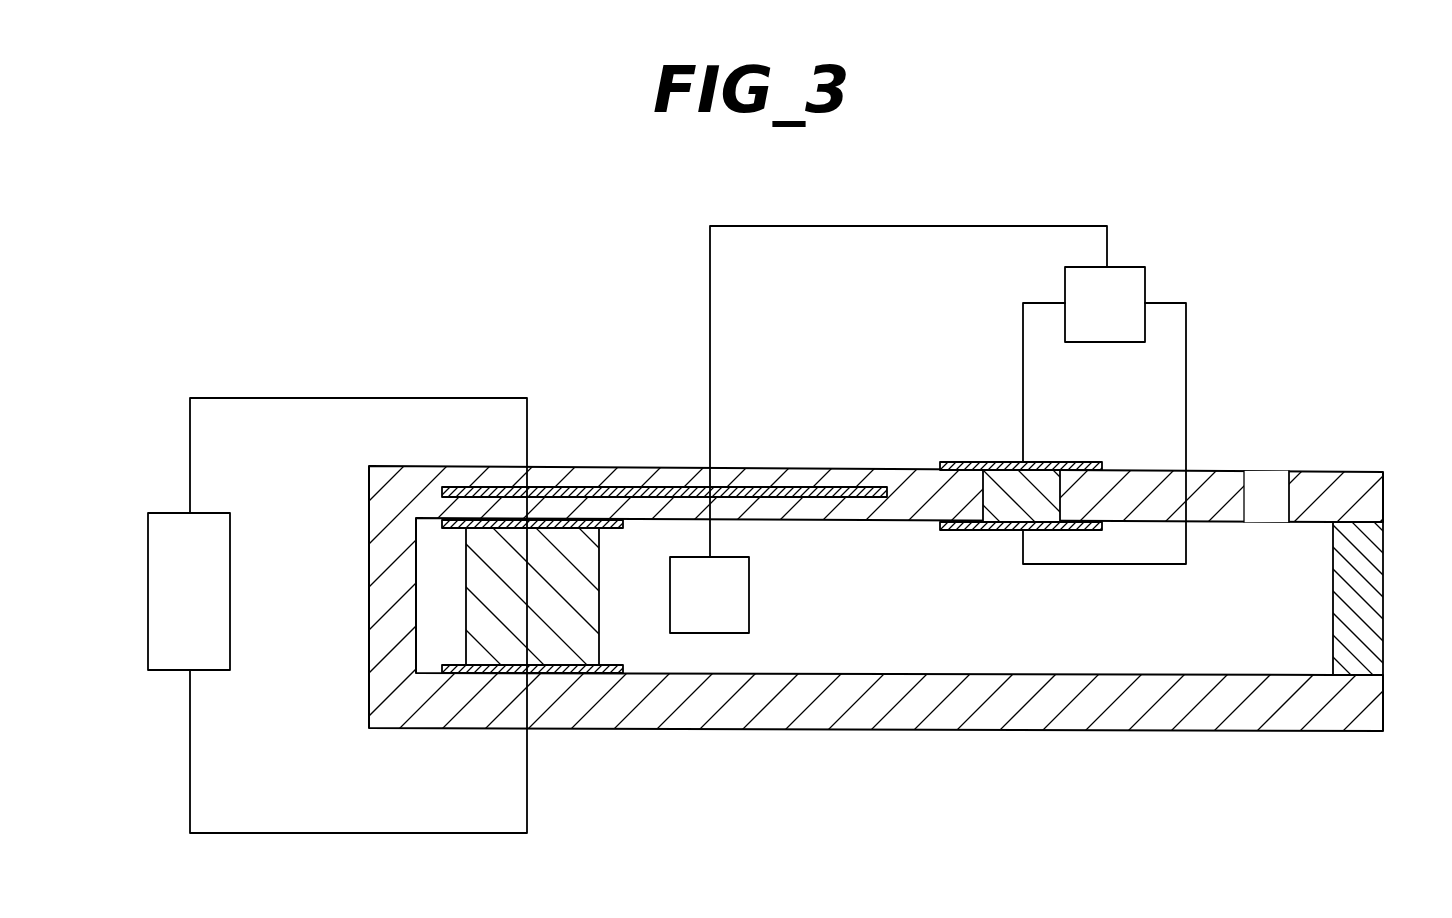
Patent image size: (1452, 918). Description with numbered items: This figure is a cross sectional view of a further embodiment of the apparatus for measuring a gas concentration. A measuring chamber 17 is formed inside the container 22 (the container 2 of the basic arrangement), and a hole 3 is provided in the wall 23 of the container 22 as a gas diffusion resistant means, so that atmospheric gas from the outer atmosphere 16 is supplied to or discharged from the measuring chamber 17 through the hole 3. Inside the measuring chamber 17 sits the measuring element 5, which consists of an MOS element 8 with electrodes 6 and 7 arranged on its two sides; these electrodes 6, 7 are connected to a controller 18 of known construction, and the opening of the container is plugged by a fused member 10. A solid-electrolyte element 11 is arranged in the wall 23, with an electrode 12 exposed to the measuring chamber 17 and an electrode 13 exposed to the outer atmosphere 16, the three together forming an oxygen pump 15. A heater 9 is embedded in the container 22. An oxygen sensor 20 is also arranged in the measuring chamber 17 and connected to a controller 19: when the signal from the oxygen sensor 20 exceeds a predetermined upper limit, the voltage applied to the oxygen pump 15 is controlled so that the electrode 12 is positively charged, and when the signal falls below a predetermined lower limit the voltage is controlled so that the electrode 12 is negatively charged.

The container 2 is at (402, 482).
The hole 3 is at (1260, 487).
The measuring element 5 is at (617, 605).
The electrode 6 is at (452, 527).
The electrode 7 is at (458, 660).
The MOS element 8 is at (487, 588).
The heater 9 is at (480, 483).
The fused member 10 is at (1363, 605).
The solid-electrolyte element 11 is at (990, 492).
The electrode 12 is at (955, 530).
The electrode 13 is at (975, 461).
The oxygen pump 15 is at (1073, 500).
The outer atmosphere 16 is at (868, 431).
The measuring chamber 17 is at (840, 613).
The controller 18 is at (337, 615).
The controller 19 is at (1104, 415).
The oxygen sensor 20 is at (888, 429).
The container 22 is at (1323, 492).
The wall 23 is at (632, 477).